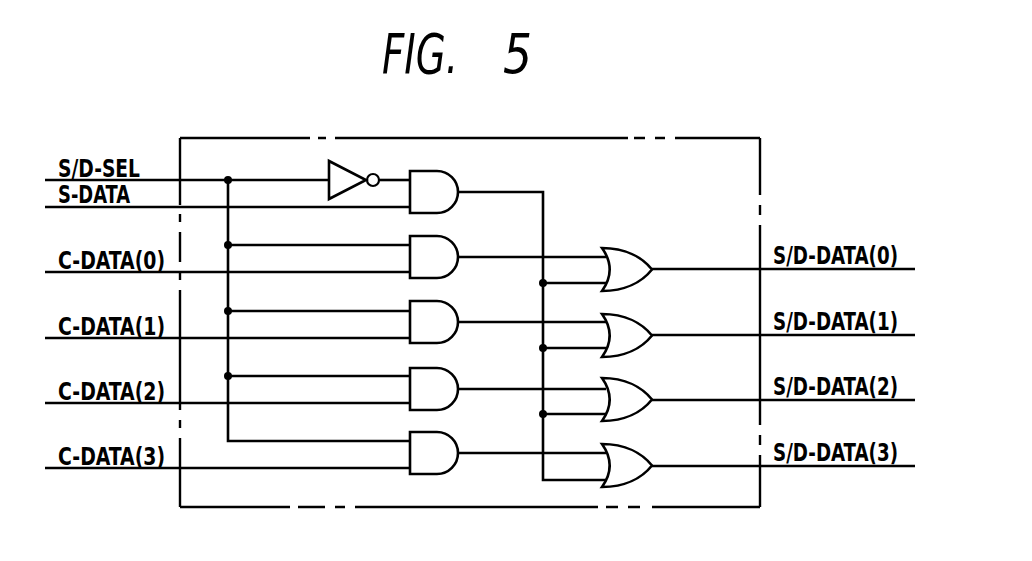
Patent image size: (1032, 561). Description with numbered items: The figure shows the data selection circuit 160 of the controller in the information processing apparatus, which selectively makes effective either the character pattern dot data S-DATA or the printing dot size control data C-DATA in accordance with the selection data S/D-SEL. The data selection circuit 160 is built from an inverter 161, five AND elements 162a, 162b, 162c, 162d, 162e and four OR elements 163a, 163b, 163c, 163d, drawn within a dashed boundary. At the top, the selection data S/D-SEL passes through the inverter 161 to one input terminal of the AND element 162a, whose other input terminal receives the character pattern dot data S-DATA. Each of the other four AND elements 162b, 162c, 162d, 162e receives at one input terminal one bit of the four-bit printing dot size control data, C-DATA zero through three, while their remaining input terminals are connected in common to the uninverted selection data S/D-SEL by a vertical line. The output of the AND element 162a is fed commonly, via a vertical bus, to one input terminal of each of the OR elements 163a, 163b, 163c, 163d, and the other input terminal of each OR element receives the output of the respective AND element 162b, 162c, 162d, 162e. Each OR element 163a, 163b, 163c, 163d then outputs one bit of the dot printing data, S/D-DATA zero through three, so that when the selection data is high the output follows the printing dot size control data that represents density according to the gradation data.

The data selection circuit 160 is at (258, 138).
The inverter 161 is at (358, 171).
The AND element 162a is at (462, 185).
The AND element 162b is at (457, 248).
The AND element 162c is at (457, 313).
The AND element 162d is at (457, 380).
The AND element 162e is at (457, 445).
The OR element 163a is at (645, 259).
The OR element 163b is at (645, 325).
The OR element 163c is at (645, 390).
The OR element 163d is at (645, 456).